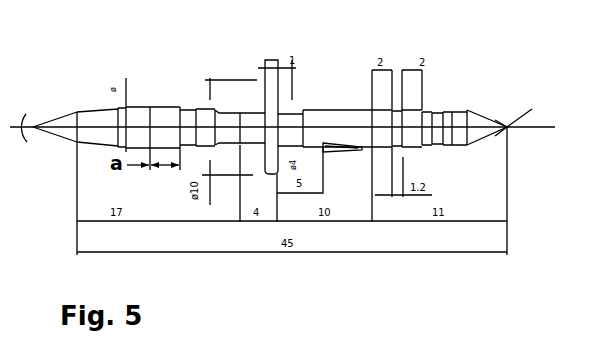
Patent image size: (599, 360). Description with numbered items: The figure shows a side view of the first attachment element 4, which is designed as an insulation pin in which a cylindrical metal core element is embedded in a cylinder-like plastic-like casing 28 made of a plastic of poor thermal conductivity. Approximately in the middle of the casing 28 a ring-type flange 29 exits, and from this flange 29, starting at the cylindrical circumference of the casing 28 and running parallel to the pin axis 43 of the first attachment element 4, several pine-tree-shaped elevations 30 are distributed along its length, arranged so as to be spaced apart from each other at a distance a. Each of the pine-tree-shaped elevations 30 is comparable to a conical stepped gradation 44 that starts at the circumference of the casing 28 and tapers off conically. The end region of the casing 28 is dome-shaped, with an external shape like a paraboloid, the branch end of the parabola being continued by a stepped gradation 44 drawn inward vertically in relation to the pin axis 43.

The first attachment element 4 is at (222, 57).
The casing 28 is at (300, 116).
The flange 29 is at (279, 101).
The pine-tree-shaped elevations 30 is at (182, 106).
The pin axis 43 is at (492, 136).
The stepped gradation 44 is at (463, 147).